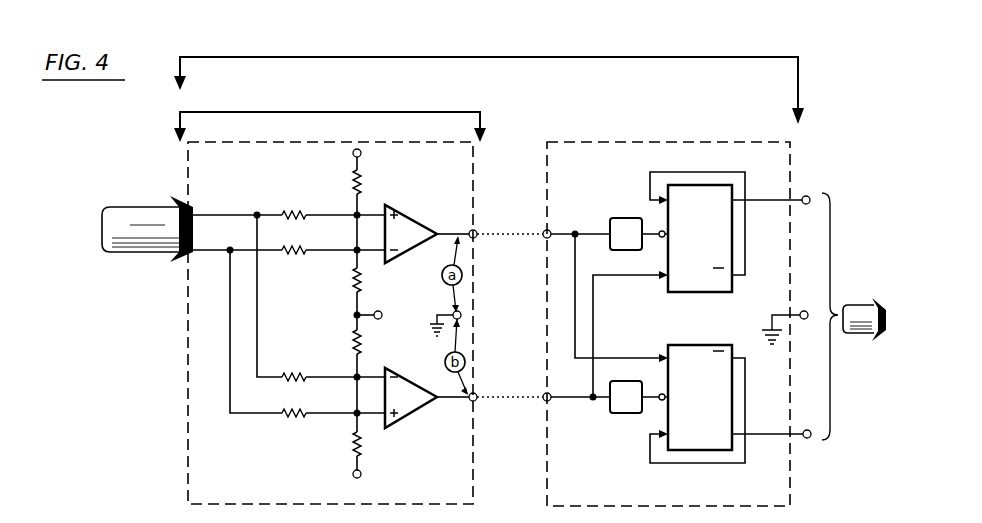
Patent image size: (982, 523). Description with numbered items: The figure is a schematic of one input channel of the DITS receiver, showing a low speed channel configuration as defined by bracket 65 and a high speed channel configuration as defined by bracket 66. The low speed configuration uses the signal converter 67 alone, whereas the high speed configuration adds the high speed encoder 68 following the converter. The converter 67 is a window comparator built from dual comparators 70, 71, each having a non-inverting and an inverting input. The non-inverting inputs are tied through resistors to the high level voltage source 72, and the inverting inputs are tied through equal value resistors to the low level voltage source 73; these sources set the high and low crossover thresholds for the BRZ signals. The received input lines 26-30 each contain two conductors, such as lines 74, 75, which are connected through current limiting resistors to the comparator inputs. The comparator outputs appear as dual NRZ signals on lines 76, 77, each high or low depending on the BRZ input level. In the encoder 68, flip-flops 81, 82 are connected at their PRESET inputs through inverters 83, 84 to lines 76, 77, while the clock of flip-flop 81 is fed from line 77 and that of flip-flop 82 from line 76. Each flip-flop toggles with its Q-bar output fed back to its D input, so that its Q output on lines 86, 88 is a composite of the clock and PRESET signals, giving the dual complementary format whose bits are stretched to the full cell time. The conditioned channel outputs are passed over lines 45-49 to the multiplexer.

The high speed channel bracket 66 is at (416, 58).
The low speed channel bracket 65 is at (210, 116).
The signal converter 67 is at (283, 141).
The high speed encoder 68 is at (643, 142).
The input lines 26-30 is at (144, 206).
The first conductor line 74 is at (208, 216).
The second conductor line 75 is at (196, 258).
The high level voltage source 72 is at (353, 153).
The low level voltage source 73 is at (378, 309).
The first comparator 70 is at (412, 222).
The second comparator 71 is at (406, 420).
The first output line 76 is at (477, 231).
The second output line 77 is at (477, 400).
The first inverter 83 is at (611, 223).
The second inverter 84 is at (612, 412).
The first flip-flop 81 is at (690, 293).
The second flip-flop 82 is at (684, 352).
The first encoder output line 86 is at (806, 195).
The second encoder output line 88 is at (807, 438).
The channel output lines 45-49 is at (855, 304).